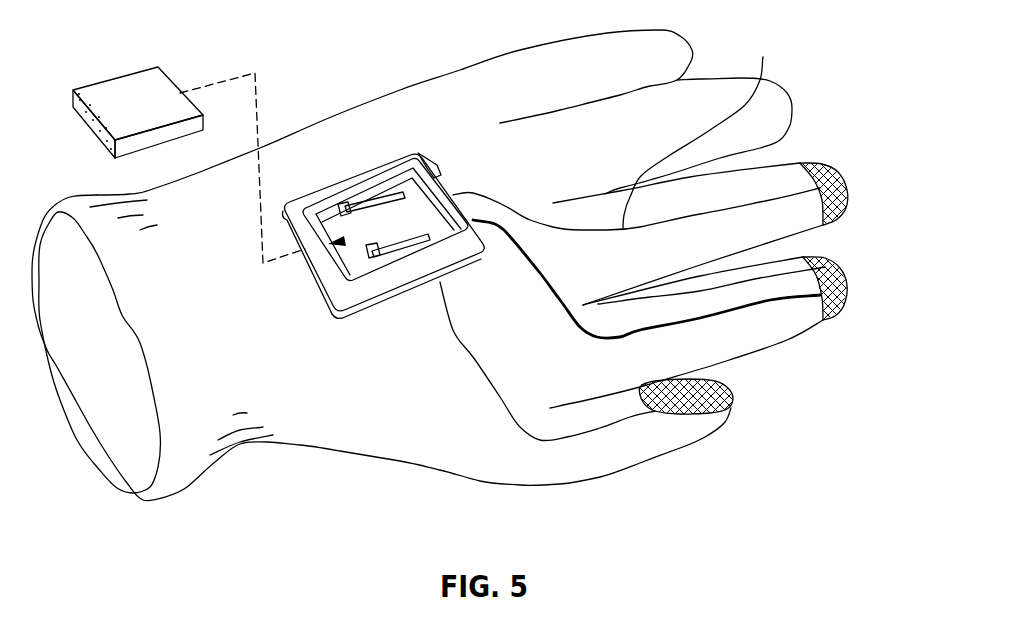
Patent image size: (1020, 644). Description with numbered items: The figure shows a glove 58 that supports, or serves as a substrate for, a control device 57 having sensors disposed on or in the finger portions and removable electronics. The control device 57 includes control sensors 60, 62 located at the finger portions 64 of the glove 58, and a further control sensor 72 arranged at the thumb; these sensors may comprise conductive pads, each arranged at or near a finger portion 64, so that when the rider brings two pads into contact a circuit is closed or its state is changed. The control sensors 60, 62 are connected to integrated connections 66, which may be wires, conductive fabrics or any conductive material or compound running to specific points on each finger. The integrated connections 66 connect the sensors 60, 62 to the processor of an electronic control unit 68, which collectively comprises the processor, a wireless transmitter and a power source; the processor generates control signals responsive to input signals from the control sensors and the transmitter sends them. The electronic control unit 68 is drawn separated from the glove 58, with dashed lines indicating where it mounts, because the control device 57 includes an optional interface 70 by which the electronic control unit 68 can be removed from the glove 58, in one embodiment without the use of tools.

The control device 57 is at (428, 48).
The glove 58 is at (512, 72).
The control sensor 60 is at (827, 180).
The control sensor 62 is at (833, 270).
The finger portion 64 is at (880, 182).
The integrated connection 66 is at (323, 512).
The electronic control unit 68 is at (113, 78).
The interface 70 is at (387, 160).
The control sensor 72 is at (697, 383).